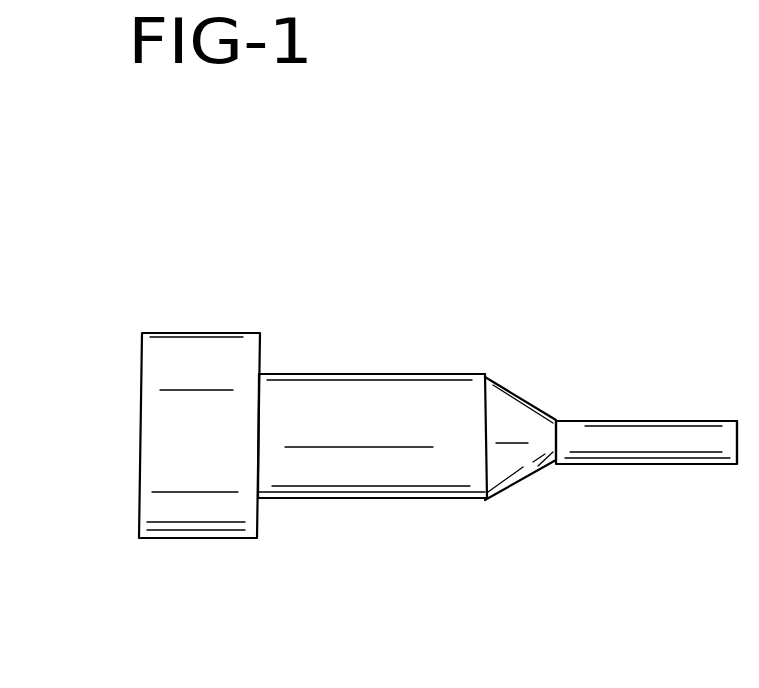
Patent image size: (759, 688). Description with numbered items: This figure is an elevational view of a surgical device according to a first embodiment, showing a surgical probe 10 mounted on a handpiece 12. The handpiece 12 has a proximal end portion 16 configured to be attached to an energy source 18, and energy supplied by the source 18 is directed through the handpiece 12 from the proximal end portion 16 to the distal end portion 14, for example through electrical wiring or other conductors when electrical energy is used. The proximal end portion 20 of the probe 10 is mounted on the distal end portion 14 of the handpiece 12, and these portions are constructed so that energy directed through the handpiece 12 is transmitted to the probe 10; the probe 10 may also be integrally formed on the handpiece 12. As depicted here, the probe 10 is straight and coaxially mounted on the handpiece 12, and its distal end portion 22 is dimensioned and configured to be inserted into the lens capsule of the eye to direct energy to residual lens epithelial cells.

The surgical probe 10 is at (500, 198).
The handpiece 12 is at (380, 470).
The distal end portion of handpiece 14 is at (517, 400).
The proximal end portion of handpiece 16 is at (302, 373).
The energy source 18 is at (200, 352).
The proximal end portion of probe 20 is at (572, 467).
The distal end portion of probe 22 is at (722, 467).